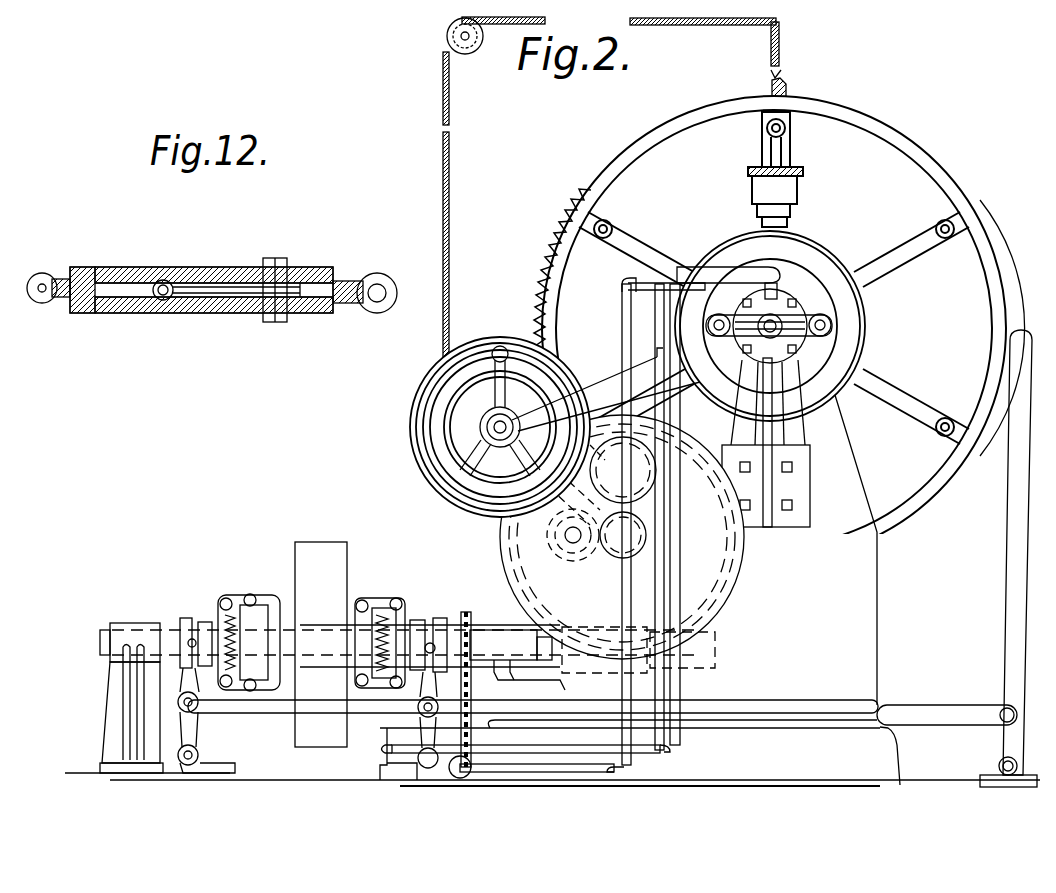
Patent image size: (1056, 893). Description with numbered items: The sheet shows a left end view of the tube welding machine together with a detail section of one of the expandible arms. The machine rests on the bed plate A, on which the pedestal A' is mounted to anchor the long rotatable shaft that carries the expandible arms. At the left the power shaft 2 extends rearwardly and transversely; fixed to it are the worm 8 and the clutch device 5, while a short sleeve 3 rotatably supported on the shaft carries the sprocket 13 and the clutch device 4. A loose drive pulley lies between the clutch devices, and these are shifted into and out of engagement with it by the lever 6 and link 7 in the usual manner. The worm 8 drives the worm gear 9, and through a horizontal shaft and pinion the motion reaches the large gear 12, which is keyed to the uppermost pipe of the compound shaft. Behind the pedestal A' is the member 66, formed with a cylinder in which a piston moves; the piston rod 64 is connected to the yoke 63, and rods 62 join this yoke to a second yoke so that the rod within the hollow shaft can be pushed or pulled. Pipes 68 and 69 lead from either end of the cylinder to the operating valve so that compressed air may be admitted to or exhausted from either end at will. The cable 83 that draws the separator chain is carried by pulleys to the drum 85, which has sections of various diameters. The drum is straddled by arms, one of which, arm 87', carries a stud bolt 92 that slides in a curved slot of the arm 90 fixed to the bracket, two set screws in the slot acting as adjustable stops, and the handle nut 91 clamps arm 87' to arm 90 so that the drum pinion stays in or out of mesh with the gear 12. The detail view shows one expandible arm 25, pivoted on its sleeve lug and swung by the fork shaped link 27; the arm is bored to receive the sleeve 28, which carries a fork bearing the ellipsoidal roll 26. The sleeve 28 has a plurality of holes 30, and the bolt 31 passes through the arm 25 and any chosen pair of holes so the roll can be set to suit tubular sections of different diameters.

In FIG. 2, the power shaft 2 is at (165, 630).
In FIG. 2, the short sleeve 3 is at (436, 622).
In FIG. 2, the clutch device 4 is at (342, 644).
In FIG. 2, the clutch device 5 is at (249, 617).
In FIG. 2, the lever 6 is at (1010, 551).
In FIG. 2, the link 7 is at (910, 678).
In FIG. 2, the worm 8 is at (602, 602).
In FIG. 2, the worm gear 9 is at (528, 587).
In FIG. 2, the gear 12 is at (878, 118).
In FIG. 2, the sprocket 13 is at (468, 614).
In FIG. 12, the arm 25 is at (180, 303).
In FIG. 12, the roll 26 is at (378, 283).
In FIG. 12, the link 27 is at (200, 266).
In FIG. 12, the sleeve 28 is at (238, 302).
In FIG. 12, the holes 30 is at (126, 302).
In FIG. 12, the bolt 31 is at (272, 262).
In FIG. 2, the rods 62 is at (718, 314).
In FIG. 2, the yoke 63 is at (826, 315).
In FIG. 2, the piston rod 64 is at (772, 300).
In FIG. 2, the member 66 is at (805, 350).
In FIG. 2, the pipe 68 is at (660, 540).
In FIG. 2, the pipe 69 is at (570, 548).
In FIG. 2, the cable 83 is at (775, 62).
In FIG. 2, the drum 85 is at (435, 404).
In FIG. 2, the arm 87' is at (606, 379).
In FIG. 2, the arm 90 is at (462, 502).
In FIG. 2, the handle nut 91 is at (502, 346).
In FIG. 2, the stud bolt 92 is at (480, 427).
In FIG. 2, the bed plate A is at (552, 753).
In FIG. 2, the pedestal A' is at (841, 590).